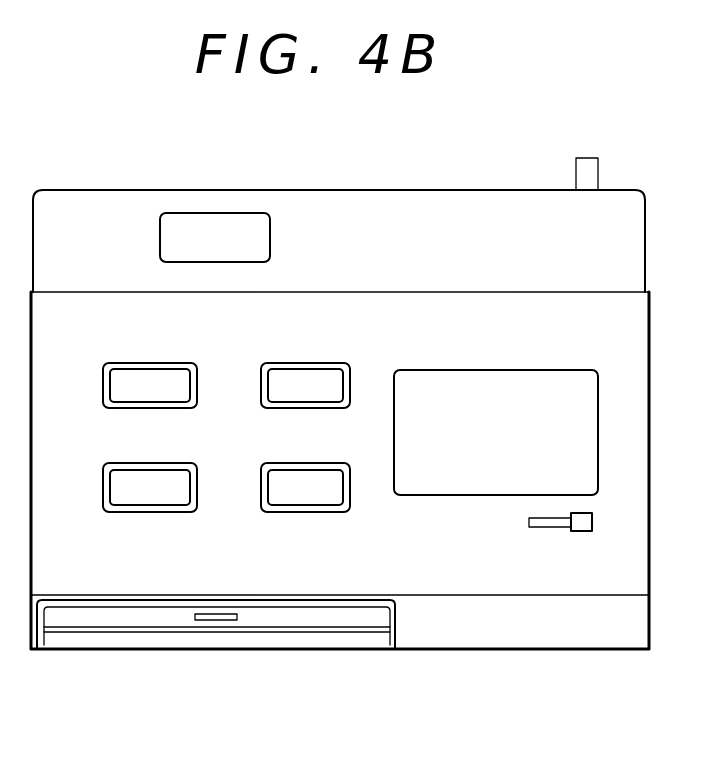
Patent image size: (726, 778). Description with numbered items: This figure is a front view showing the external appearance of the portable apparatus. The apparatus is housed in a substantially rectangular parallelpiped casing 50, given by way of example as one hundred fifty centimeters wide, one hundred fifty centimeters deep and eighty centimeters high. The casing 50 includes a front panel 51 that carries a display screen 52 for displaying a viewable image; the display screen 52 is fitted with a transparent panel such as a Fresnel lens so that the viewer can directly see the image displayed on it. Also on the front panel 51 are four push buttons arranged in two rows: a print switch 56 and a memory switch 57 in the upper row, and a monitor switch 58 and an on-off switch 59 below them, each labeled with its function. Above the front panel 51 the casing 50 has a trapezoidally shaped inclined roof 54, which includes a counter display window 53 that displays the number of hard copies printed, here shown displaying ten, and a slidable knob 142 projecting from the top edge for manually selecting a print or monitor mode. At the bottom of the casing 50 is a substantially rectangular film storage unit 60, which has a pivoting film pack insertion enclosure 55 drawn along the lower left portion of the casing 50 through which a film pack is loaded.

The casing 50 is at (650, 242).
The front panel 51 is at (633, 521).
The display screen 52 is at (582, 439).
The counter display window 53 is at (227, 214).
The inclined roof 54 is at (536, 190).
The film pack insertion enclosure 55 is at (77, 636).
The print switch 56 is at (178, 367).
The memory switch 57 is at (315, 371).
The monitor switch 58 is at (180, 488).
The on-off switch 59 is at (330, 488).
The film storage unit 60 is at (476, 631).
The slidable knob 142 is at (593, 168).